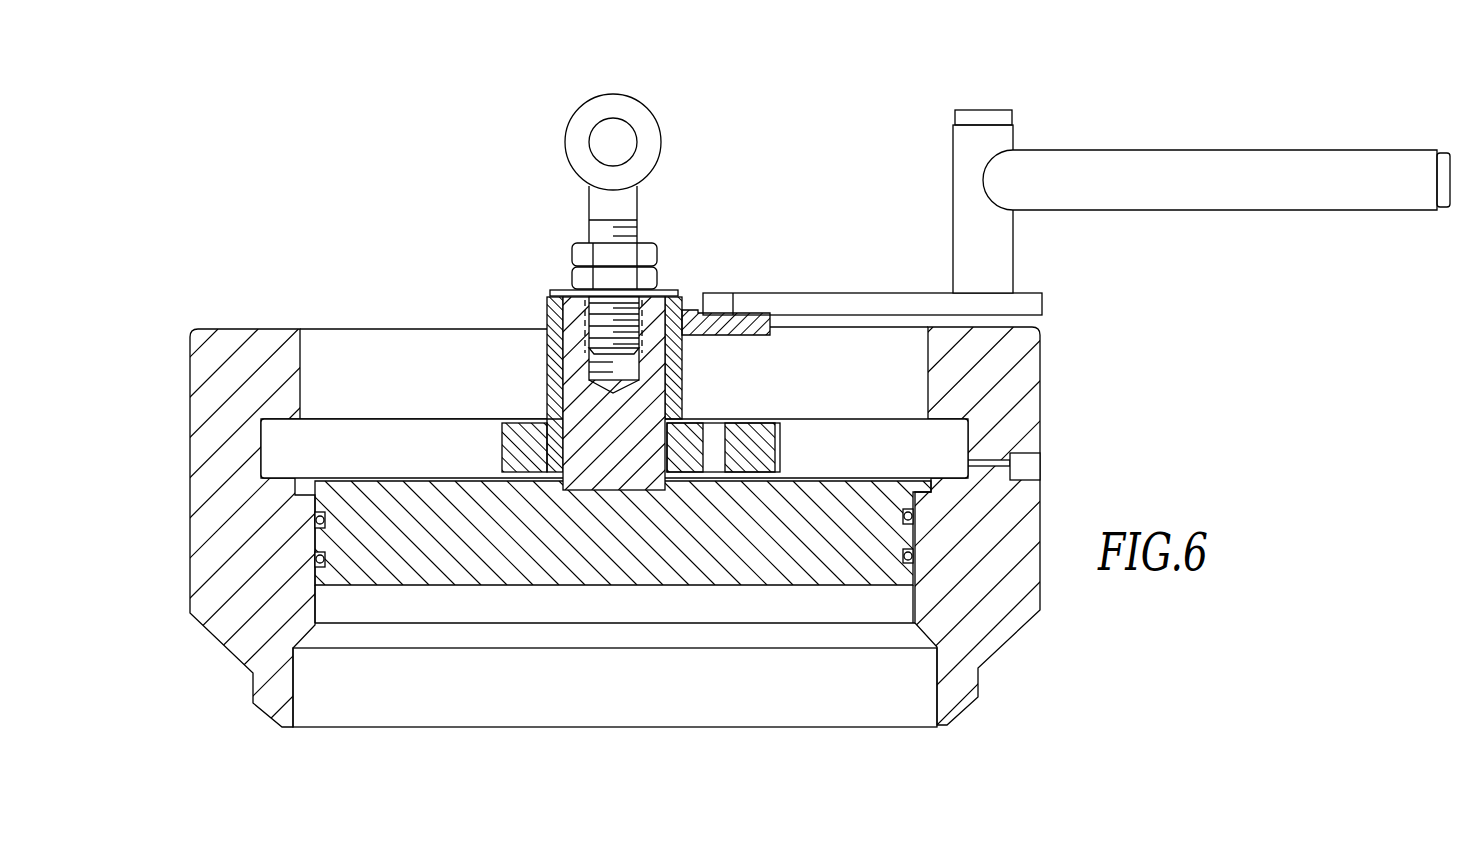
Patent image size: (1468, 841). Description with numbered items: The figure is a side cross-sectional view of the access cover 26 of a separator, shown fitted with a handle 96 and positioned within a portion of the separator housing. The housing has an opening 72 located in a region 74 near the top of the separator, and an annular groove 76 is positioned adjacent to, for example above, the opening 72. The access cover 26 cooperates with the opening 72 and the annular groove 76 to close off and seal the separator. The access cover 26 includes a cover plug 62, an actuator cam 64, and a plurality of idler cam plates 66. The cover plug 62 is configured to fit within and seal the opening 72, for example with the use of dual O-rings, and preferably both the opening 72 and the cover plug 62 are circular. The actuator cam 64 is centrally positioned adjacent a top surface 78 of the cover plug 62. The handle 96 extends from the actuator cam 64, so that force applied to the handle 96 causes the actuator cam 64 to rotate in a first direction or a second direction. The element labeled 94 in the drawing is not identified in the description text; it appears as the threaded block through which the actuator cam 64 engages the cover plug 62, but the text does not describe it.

The access cover 26 is at (853, 170).
The cover plug 62 is at (486, 592).
The actuator cam 64 is at (537, 407).
The idler cam plates 66 is at (443, 418).
The opening 72 is at (557, 703).
The region 74 is at (216, 663).
The annular groove 76 is at (279, 417).
The top surface 78 is at (388, 480).
The threaded block 94 is at (627, 456).
The handle 96 is at (1107, 150).